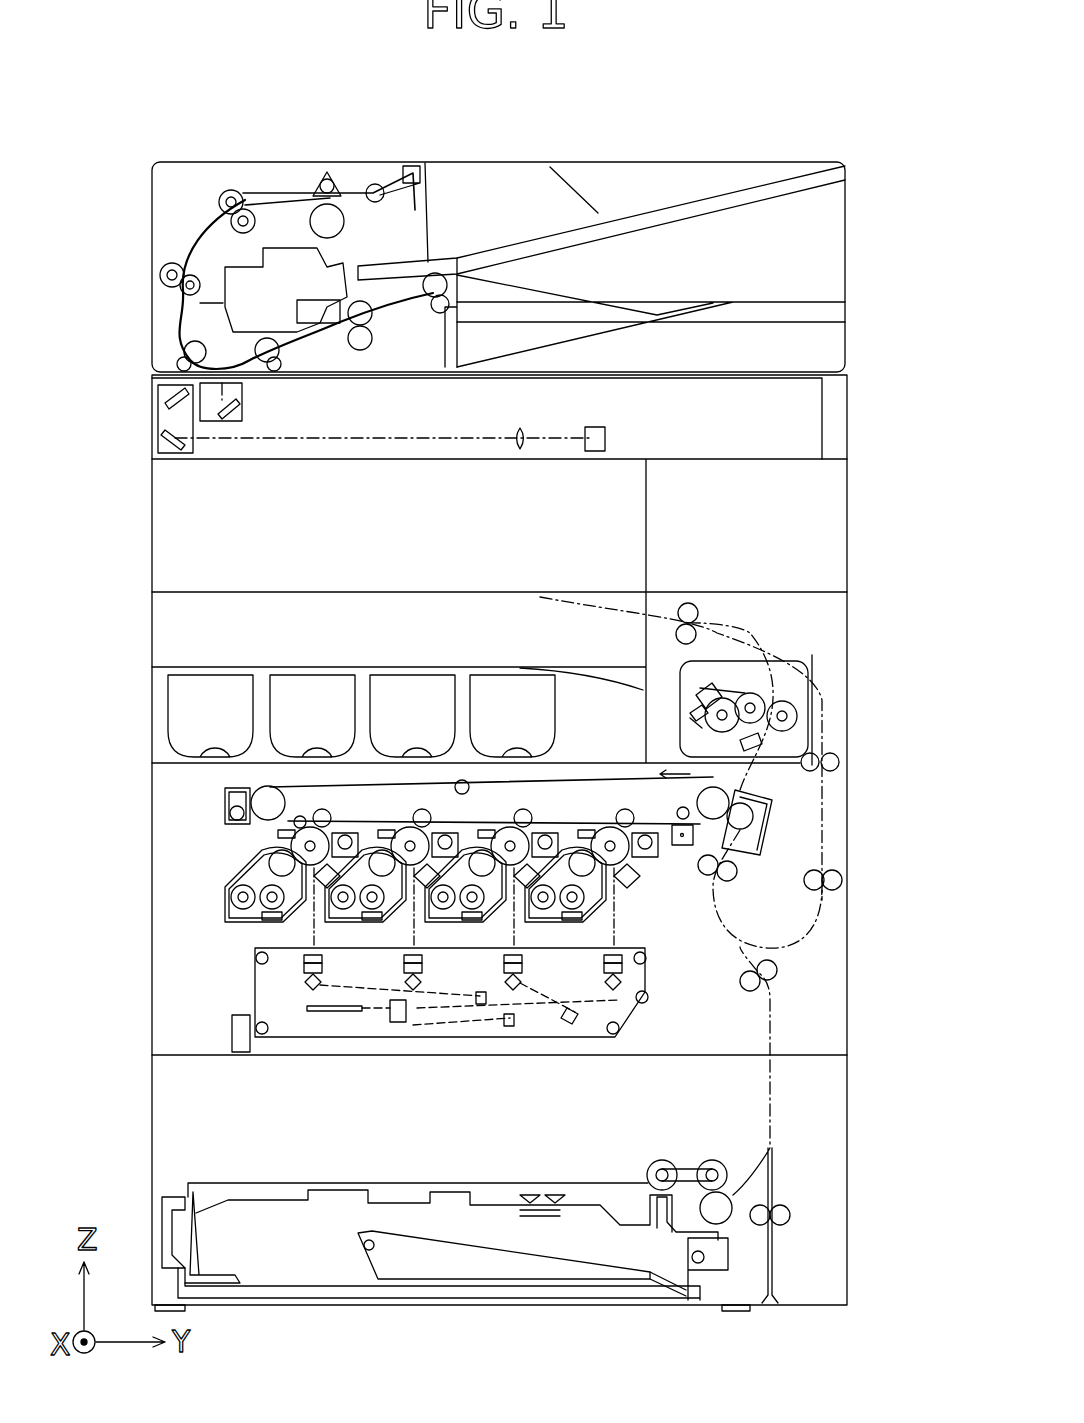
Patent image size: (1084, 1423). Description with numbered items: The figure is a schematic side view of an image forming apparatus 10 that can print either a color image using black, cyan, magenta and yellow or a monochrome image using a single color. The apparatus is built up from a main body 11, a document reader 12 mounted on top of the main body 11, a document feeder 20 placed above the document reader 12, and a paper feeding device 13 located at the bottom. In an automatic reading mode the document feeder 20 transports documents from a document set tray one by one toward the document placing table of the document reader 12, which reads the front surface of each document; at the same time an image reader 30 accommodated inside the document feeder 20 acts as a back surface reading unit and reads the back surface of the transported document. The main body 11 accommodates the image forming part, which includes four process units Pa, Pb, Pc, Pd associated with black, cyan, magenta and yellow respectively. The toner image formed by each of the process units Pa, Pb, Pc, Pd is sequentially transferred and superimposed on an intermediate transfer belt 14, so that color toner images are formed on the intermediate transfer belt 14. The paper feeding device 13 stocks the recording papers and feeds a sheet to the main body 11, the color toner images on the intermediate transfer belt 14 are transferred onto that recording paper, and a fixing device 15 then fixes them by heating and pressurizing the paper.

The image forming apparatus 10 is at (632, 101).
The document feeder 20 is at (852, 233).
The image reader 30 is at (237, 253).
The document reader 12 is at (852, 427).
The main body 11 is at (852, 803).
The intermediate transfer belt 14 is at (340, 782).
The fixing device 15 is at (810, 697).
The paper feeding device 13 is at (852, 1172).
The process unit Pa is at (595, 805).
The process unit Pb is at (485, 805).
The process unit Pc is at (383, 805).
The process unit Pd is at (236, 867).